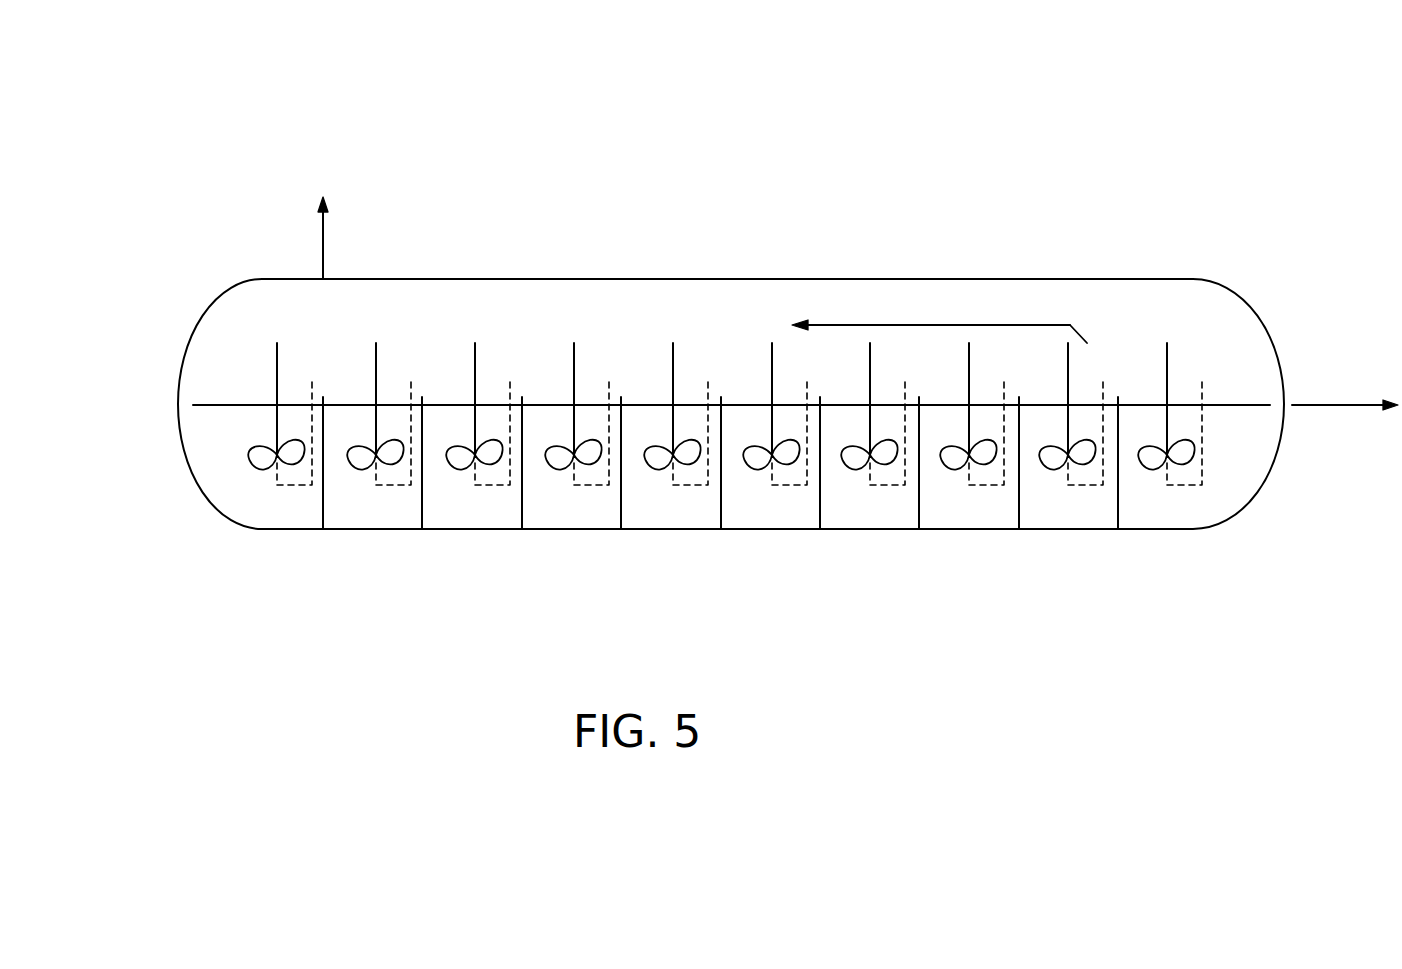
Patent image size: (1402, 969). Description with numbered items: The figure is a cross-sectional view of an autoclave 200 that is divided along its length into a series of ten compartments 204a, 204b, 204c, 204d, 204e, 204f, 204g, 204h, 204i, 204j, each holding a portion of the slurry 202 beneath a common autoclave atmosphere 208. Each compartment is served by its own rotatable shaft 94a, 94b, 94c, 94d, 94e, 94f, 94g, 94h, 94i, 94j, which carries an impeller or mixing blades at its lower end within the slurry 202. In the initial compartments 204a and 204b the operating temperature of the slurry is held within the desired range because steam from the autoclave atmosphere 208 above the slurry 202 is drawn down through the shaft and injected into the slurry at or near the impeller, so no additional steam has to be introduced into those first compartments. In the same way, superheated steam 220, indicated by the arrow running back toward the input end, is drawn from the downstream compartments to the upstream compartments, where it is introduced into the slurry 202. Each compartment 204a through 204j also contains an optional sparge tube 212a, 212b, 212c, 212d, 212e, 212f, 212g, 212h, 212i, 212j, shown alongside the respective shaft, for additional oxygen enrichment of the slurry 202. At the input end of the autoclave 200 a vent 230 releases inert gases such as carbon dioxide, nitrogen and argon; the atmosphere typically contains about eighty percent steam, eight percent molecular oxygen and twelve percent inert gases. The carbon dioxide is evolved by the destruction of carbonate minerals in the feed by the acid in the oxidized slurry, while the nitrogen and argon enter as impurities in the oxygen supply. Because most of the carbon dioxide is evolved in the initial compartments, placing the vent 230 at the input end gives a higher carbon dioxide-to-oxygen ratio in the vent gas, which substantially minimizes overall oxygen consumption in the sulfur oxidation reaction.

The autoclave 200 is at (747, 452).
The slurry 202 is at (128, 163).
The initial compartment 204a is at (273, 512).
The initial compartment 204b is at (393, 508).
The compartment 204c is at (497, 515).
The compartment 204d is at (593, 517).
The compartment 204e is at (688, 518).
The compartment 204f is at (775, 517).
The compartment 204g is at (893, 517).
The compartment 204h is at (992, 517).
The compartment 204i is at (1095, 517).
The compartment 204j is at (1227, 498).
The autoclave atmosphere 208 is at (688, 318).
The sparge tube 212a is at (312, 380).
The sparge tube 212b is at (411, 380).
The sparge tube 212c is at (510, 380).
The sparge tube 212d is at (609, 380).
The sparge tube 212e is at (708, 380).
The sparge tube 212f is at (807, 380).
The sparge tube 212g is at (905, 380).
The sparge tube 212h is at (1004, 380).
The sparge tube 212i is at (1103, 380).
The sparge tube 212j is at (1202, 380).
The superheated steam 220 is at (973, 325).
The vent 230 is at (318, 216).
The rotatable shaft 94a is at (277, 380).
The rotatable shaft 94b is at (353, 470).
The rotatable shaft 94c is at (452, 470).
The rotatable shaft 94d is at (551, 470).
The rotatable shaft 94e is at (650, 470).
The rotatable shaft 94f is at (748, 470).
The rotatable shaft 94g is at (847, 470).
The rotatable shaft 94h is at (946, 465).
The rotatable shaft 94i is at (1045, 465).
The rotatable shaft 94j is at (1183, 468).